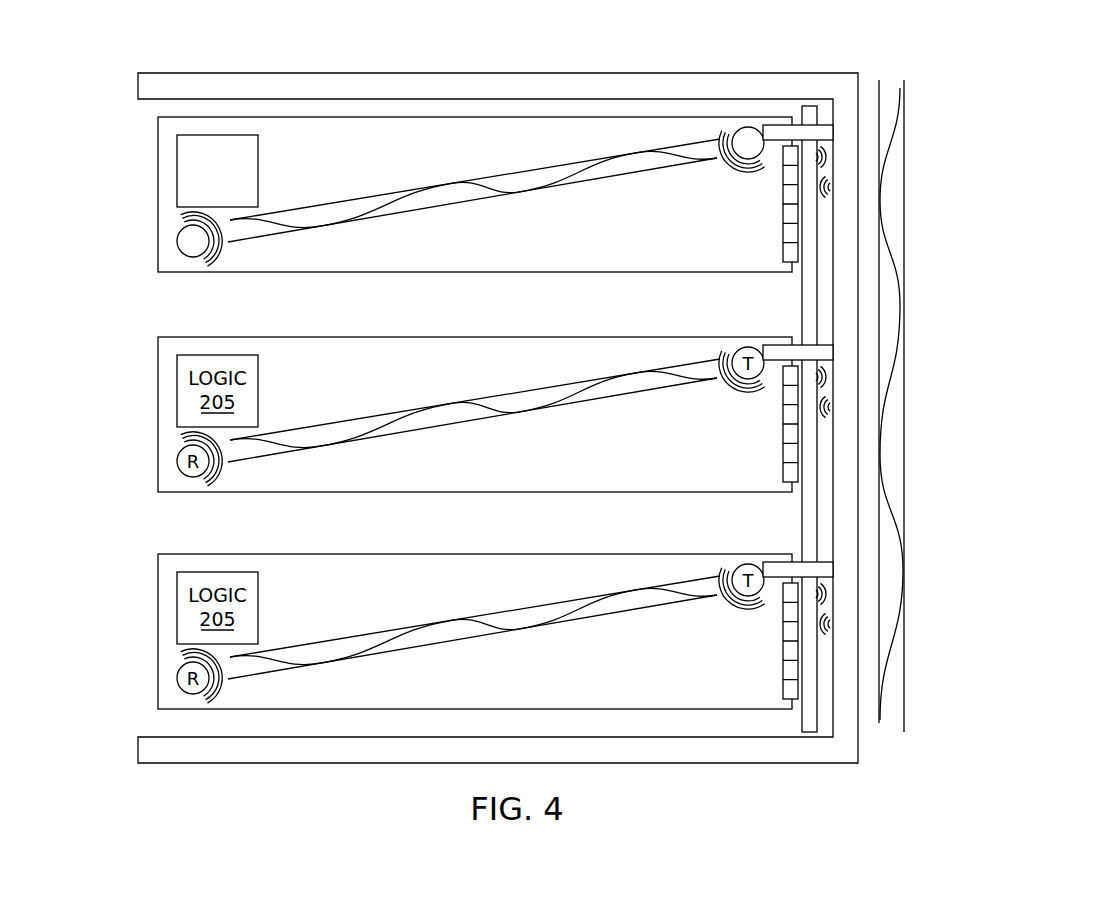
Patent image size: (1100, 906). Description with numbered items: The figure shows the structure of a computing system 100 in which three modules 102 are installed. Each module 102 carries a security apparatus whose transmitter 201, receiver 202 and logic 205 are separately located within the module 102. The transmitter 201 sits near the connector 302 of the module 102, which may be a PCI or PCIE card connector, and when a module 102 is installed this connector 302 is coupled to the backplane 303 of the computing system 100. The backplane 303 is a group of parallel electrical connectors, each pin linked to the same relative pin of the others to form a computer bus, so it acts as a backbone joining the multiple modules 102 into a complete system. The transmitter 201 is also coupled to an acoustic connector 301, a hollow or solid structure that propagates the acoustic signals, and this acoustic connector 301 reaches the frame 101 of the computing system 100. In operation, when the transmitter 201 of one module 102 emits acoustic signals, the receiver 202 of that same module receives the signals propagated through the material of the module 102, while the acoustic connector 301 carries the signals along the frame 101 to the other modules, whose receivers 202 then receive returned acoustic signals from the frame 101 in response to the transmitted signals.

The computing system 100 is at (233, 46).
The frame 101 is at (845, 602).
The module 102 is at (158, 190).
The transmitter 201 is at (743, 128).
The receiver 202 is at (183, 252).
The logic 205 is at (201, 193).
The acoustic connector 301 is at (823, 134).
The connector 302 is at (927, 262).
The backplane 303 is at (933, 419).